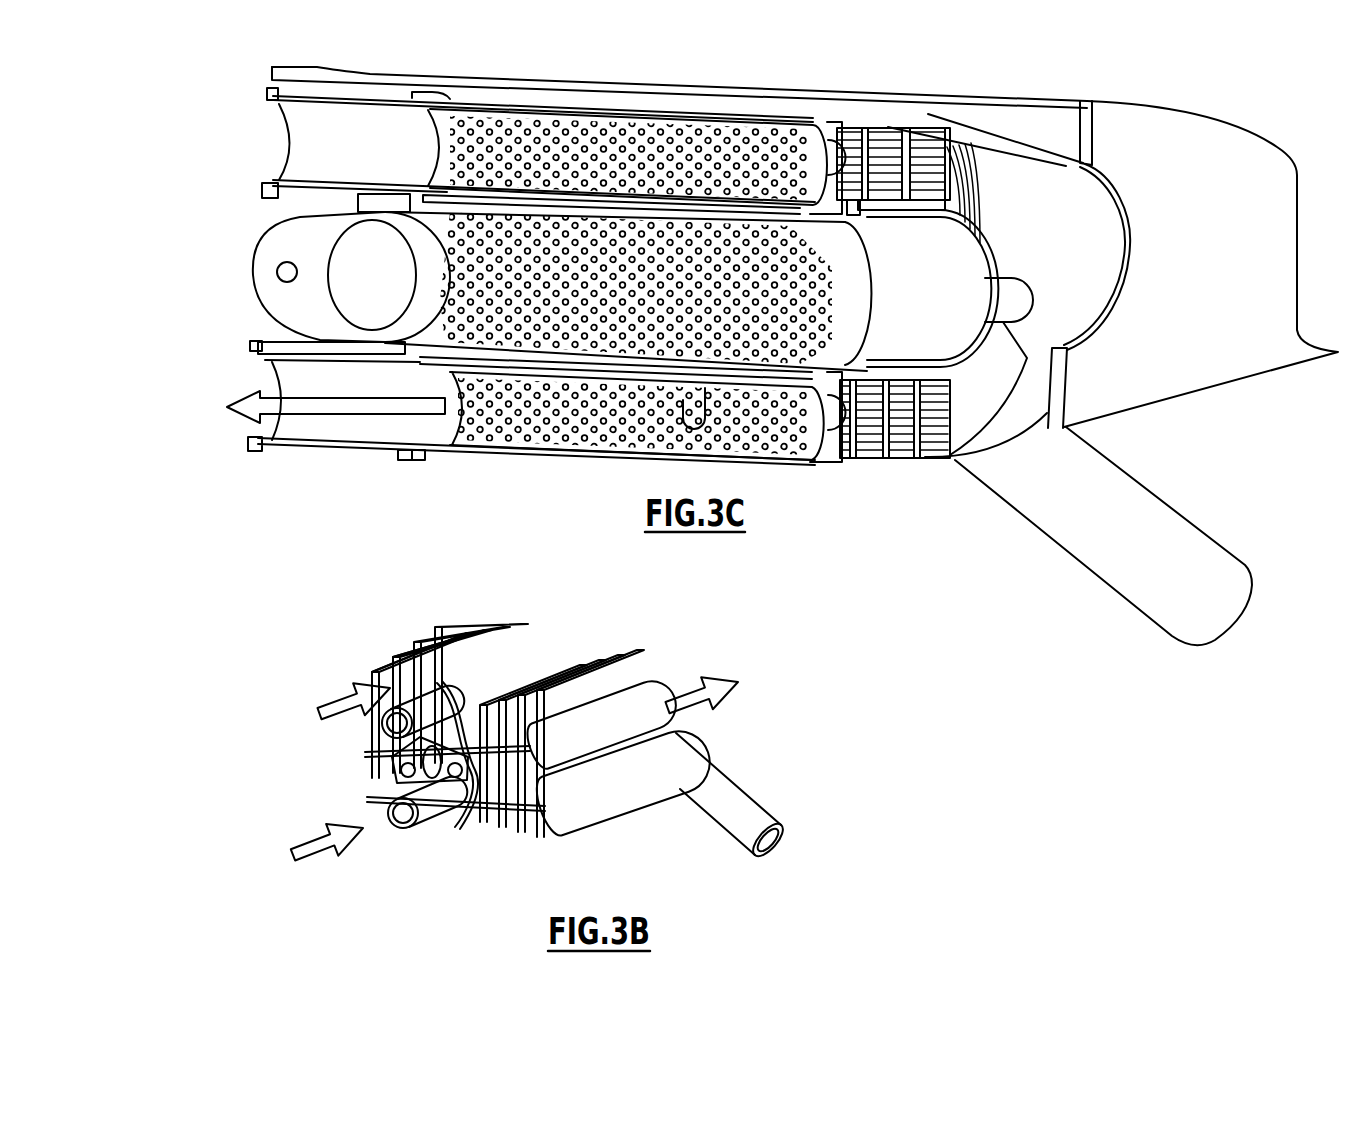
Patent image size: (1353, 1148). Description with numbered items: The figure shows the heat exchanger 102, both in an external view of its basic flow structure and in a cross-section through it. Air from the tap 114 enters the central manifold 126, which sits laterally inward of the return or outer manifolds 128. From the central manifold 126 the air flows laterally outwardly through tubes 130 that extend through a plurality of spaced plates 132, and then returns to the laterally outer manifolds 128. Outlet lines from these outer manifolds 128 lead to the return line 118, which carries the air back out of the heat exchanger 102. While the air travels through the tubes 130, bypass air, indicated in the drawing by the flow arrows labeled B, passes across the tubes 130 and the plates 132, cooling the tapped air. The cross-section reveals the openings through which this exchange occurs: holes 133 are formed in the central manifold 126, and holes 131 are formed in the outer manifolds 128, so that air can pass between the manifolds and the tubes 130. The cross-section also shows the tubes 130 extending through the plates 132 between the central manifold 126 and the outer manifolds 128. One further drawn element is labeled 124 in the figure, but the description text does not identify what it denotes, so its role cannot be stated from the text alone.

In FIG. 3C, the heat exchanger 102 is at (173, 139).
In FIG. 3B, the heat exchanger 102 is at (430, 876).
In FIG. 3C, the tap 114 is at (1208, 570).
In FIG. 3B, the tap 114 is at (735, 828).
In FIG. 3B, the return line 118 is at (445, 812).
In FIG. 3C, the housing 124 is at (712, 113).
In FIG. 3C, the central manifold 126 is at (415, 283).
In FIG. 3C, the outer manifolds 128 is at (430, 180).
In FIG. 3C, the tubes 130 is at (873, 157).
In FIG. 3C, the holes 131 is at (548, 126).
In FIG. 3C, the plates 132 is at (840, 447).
In FIG. 3B, the plates 132 is at (520, 707).
In FIG. 3C, the holes 133 is at (472, 338).